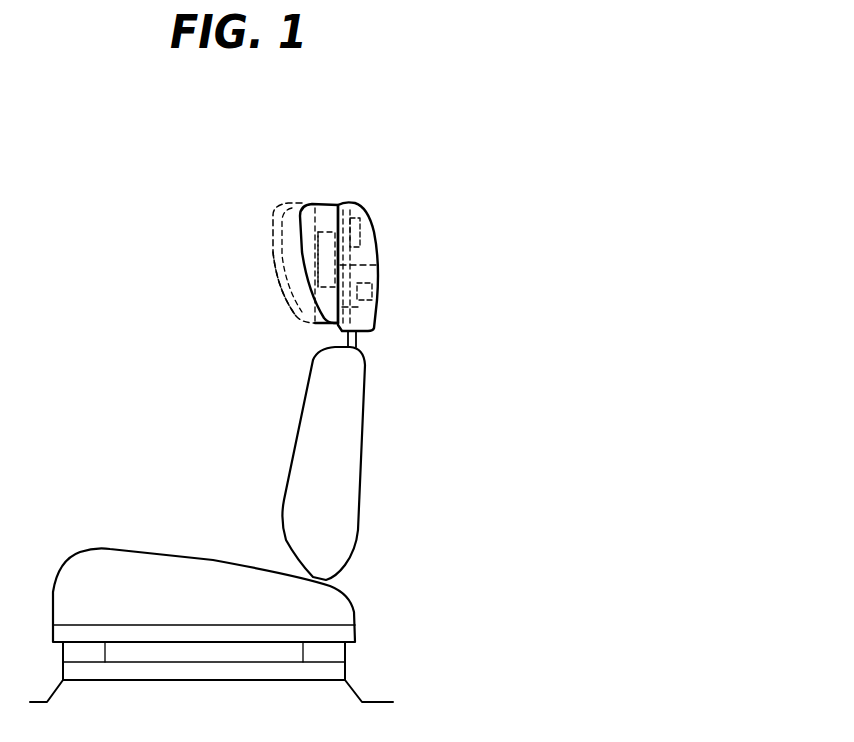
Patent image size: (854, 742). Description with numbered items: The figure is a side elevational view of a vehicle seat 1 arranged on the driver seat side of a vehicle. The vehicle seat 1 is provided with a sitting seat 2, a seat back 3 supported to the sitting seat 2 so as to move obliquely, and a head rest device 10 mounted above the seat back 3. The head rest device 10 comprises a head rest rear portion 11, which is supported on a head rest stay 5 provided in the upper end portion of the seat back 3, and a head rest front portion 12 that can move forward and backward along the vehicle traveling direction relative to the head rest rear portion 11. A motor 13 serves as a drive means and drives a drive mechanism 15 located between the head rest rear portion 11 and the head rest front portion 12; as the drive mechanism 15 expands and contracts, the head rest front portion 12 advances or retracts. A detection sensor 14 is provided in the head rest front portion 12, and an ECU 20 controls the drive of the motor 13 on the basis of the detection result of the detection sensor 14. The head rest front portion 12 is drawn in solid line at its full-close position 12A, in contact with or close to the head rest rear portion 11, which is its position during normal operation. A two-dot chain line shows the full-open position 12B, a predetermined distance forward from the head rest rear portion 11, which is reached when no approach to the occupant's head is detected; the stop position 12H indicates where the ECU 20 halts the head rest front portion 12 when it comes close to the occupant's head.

The vehicle seat 1 is at (175, 412).
The sitting seat 2 is at (213, 560).
The seat back 3 is at (300, 423).
The head rest stay 5 is at (360, 343).
The head rest device 10 is at (288, 176).
The head rest rear portion 11 is at (358, 203).
The head rest front portion 12 is at (325, 200).
The full-close position 12A is at (323, 328).
The full-open position 12B is at (277, 293).
The stop position 12H is at (270, 222).
The motor 13 is at (380, 293).
The detection sensor 14 is at (312, 263).
The drive mechanism 15 is at (380, 267).
The ECU 20 is at (367, 226).